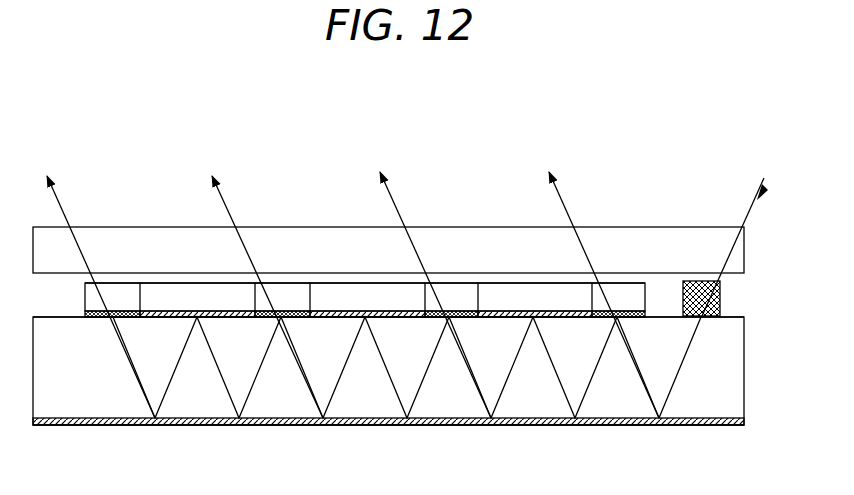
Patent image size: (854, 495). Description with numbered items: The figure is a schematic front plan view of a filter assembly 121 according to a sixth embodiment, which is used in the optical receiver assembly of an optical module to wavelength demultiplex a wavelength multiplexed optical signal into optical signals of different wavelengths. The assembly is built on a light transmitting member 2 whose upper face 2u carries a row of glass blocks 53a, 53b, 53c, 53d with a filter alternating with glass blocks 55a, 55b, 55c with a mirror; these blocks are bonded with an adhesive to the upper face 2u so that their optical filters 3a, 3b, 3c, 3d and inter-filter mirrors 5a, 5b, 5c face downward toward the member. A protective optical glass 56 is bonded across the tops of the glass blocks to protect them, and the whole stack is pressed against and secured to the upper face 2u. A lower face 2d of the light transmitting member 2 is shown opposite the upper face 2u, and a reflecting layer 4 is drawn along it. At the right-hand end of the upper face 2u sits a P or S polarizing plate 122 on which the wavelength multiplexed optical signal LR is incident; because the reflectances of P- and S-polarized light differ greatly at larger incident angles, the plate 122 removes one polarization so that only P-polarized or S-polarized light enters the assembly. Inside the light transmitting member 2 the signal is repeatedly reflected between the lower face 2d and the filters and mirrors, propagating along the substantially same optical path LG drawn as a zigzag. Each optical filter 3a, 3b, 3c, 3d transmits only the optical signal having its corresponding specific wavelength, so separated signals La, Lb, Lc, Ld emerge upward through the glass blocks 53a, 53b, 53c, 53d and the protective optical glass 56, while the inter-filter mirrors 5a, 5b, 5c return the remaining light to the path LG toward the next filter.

The filter assembly 121 is at (362, 128).
The P or S polarizing plate 122 is at (698, 280).
The protective optical glass 56 is at (745, 244).
The light transmitting member 2 is at (745, 340).
The upper face of light transmitting member 2u is at (745, 316).
The lower surface of light guide plate 2d is at (712, 426).
The reflection sheet 4 is at (524, 426).
The optical filter 3a is at (104, 318).
The optical filter 3b is at (292, 318).
The optical filter 3c is at (450, 318).
The optical filter 3d is at (630, 318).
The inter-filter mirror 5a is at (212, 318).
The inter-filter mirror 5b is at (387, 318).
The inter-filter mirror 5c is at (557, 318).
The glass block with a filter 53a is at (118, 272).
The glass block with a filter 53b is at (284, 272).
The glass block with a filter 53c is at (454, 272).
The glass block with a filter 53d is at (618, 272).
The glass block with a mirror 55a is at (176, 272).
The glass block with a mirror 55b is at (344, 272).
The glass block with a mirror 55c is at (514, 272).
The optical path LG is at (172, 398).
The emitted light La is at (62, 200).
The emitted light Lb is at (228, 200).
The emitted light Lc is at (396, 200).
The emitted light Ld is at (563, 198).
The wavelength multiplexed optical signal LR is at (752, 206).